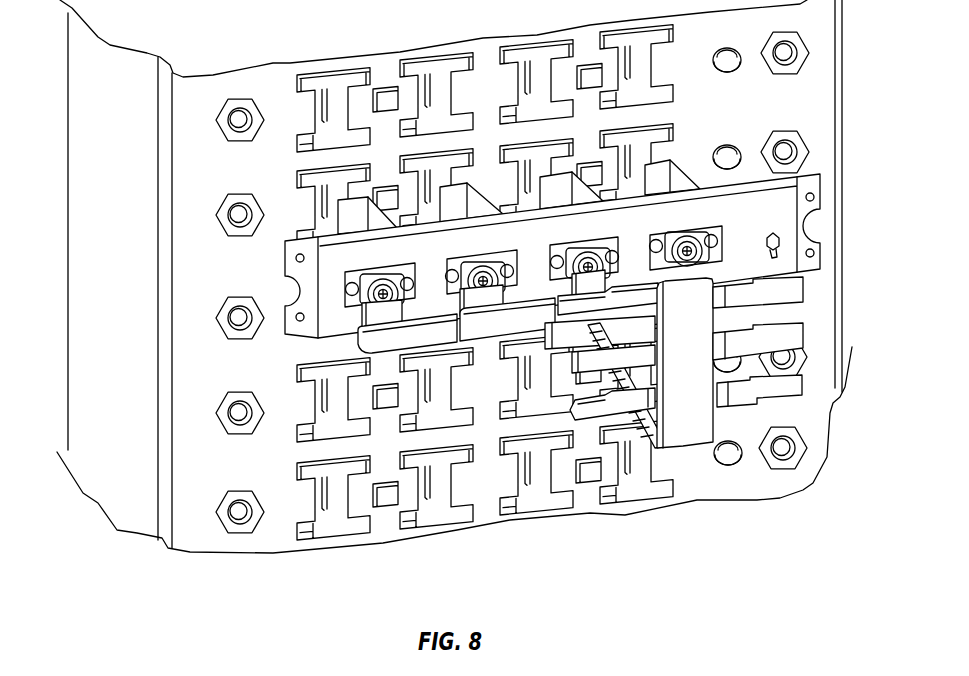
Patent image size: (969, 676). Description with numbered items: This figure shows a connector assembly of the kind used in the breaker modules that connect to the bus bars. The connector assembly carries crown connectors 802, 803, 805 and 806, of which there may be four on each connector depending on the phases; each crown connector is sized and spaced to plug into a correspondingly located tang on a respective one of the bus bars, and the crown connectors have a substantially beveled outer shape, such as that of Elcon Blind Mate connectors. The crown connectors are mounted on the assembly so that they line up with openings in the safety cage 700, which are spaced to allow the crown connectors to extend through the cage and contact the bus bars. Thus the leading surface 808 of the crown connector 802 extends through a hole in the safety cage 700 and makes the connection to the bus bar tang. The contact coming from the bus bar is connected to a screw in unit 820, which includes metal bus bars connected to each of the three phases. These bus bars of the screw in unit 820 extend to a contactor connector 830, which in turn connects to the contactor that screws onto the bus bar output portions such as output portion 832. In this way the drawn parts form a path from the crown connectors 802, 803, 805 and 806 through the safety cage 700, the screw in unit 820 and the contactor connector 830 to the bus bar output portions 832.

The safety cage 700 is at (487, 177).
The crown connector 802 is at (677, 173).
The crown connector 803 is at (572, 173).
The crown connector 805 is at (457, 200).
The crown connector 806 is at (357, 213).
The leading surface 808 is at (658, 198).
The screw in unit 820 is at (358, 343).
The contactor connector 830 is at (770, 297).
The bus bar output portion 832 is at (570, 412).